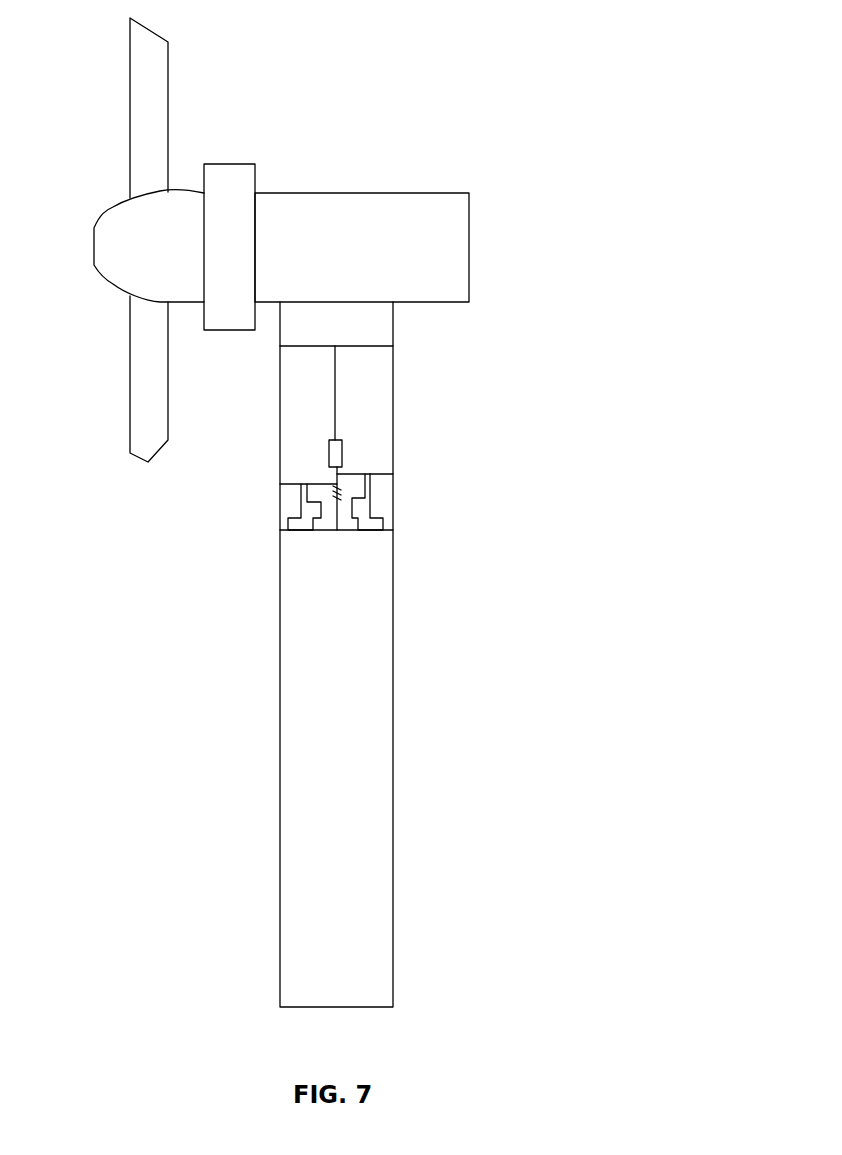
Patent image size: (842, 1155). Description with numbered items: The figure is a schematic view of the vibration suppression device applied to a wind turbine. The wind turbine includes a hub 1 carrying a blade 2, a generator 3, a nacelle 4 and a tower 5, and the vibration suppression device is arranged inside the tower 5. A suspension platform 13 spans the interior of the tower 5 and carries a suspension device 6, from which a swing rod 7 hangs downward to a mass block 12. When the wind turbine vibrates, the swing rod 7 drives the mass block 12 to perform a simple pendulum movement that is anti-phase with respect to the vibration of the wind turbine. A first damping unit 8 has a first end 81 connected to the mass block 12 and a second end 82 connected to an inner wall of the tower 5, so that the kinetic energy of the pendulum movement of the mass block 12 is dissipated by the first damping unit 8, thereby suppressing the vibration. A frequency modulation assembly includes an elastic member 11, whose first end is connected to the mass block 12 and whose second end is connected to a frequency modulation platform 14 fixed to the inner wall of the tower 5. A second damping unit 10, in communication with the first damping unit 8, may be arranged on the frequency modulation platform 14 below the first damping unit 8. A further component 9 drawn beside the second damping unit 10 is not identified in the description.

The hub 1 is at (125, 260).
The blade 2 is at (153, 118).
The generator 3 is at (242, 185).
The nacelle 4 is at (469, 232).
The tower 5 is at (393, 712).
The suspension device 6 is at (335, 346).
The swing rod 7 is at (340, 418).
The first damping unit 8 is at (372, 471).
The first end 81 is at (343, 465).
The support frame 82 is at (367, 473).
The bracket 9 is at (380, 493).
The second damping unit 10 is at (385, 528).
The elastic member 11 is at (338, 522).
The mass block 12 is at (328, 442).
The suspension platform 13 is at (300, 368).
The frequency modulation platform 14 is at (340, 531).